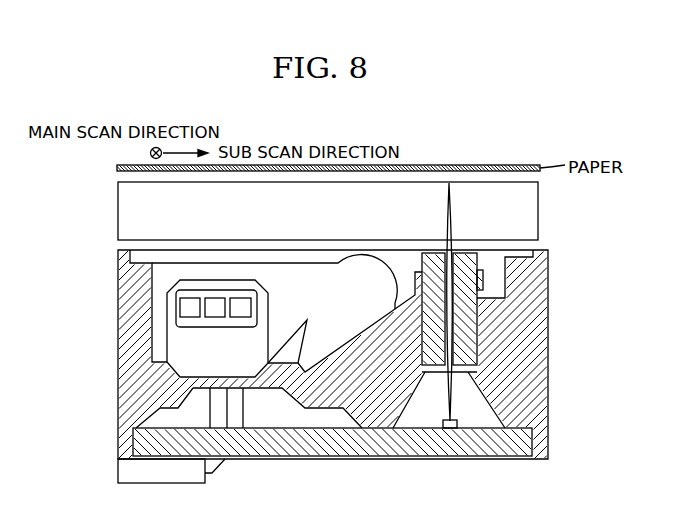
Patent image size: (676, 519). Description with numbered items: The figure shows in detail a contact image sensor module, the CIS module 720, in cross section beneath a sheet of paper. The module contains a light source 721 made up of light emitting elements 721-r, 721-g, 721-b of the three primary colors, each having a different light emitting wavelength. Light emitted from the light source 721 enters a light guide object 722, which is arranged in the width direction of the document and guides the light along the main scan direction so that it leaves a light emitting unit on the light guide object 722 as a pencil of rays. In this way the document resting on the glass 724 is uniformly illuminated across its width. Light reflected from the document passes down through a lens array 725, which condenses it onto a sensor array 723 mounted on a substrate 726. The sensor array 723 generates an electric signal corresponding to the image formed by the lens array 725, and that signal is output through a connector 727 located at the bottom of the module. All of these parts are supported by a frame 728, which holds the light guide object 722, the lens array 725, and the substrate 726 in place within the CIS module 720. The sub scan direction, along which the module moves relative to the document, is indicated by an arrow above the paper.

The CIS module 720 is at (403, 118).
The light source 721 is at (165, 388).
The red light emitting element 721-r is at (180, 305).
The green light emitting element 721-g is at (215, 311).
The blue light emitting element 721-b is at (241, 313).
The light guide object 722 is at (160, 273).
The sensor array 723 is at (450, 428).
The glass 724 is at (532, 208).
The lens array 725 is at (465, 287).
The substrate 726 is at (345, 450).
The connector 727 is at (165, 473).
The frame 728 is at (542, 358).